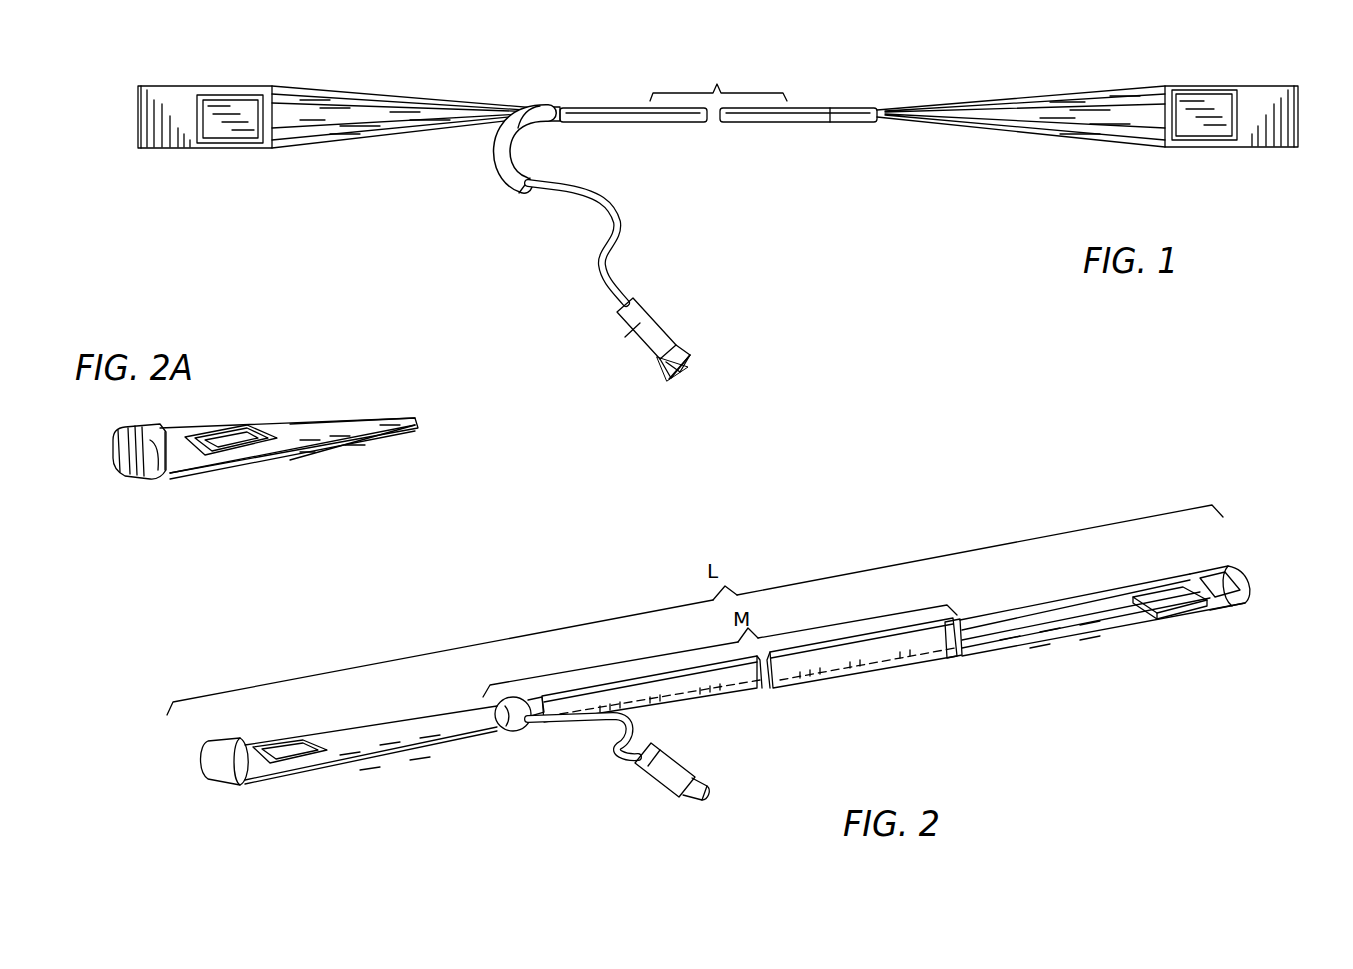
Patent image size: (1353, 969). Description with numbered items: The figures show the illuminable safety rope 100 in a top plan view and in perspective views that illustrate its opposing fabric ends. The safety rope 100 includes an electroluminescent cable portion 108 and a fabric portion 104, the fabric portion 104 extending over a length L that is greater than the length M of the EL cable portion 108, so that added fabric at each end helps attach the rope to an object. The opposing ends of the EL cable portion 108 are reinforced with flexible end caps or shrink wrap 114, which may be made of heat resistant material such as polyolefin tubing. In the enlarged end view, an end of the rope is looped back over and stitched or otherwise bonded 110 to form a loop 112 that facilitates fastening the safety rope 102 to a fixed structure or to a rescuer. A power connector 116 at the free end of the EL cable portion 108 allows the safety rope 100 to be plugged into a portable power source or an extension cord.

In FIG. 1, the illuminable safety rope 100 is at (967, 338).
In FIG. 2, the illuminable safety rope 100 is at (1226, 789).
In FIG. 1, the safety rope 102 is at (745, 124).
In FIG. 2, the safety rope 102 is at (749, 670).
In FIG. 1, the fabric portion 104 is at (346, 103).
In FIG. 2A, the fabric portion 104 is at (385, 440).
In FIG. 1, the electroluminescent (EL) cable portion 108 is at (595, 272).
In FIG. 2, the electroluminescent (EL) cable portion 108 is at (583, 736).
In FIG. 1, the stitching / bonding 110 is at (265, 150).
In FIG. 2A, the stitching / bonding 110 is at (240, 428).
In FIG. 2, the stitching / bonding 110 is at (290, 751).
In FIG. 2A, the loop 112 is at (158, 478).
In FIG. 1, the end cap 114 is at (522, 192).
In FIG. 2, the end cap 114 is at (502, 732).
In FIG. 1, the power connector 116 is at (662, 318).
In FIG. 2, the power connector 116 is at (660, 792).